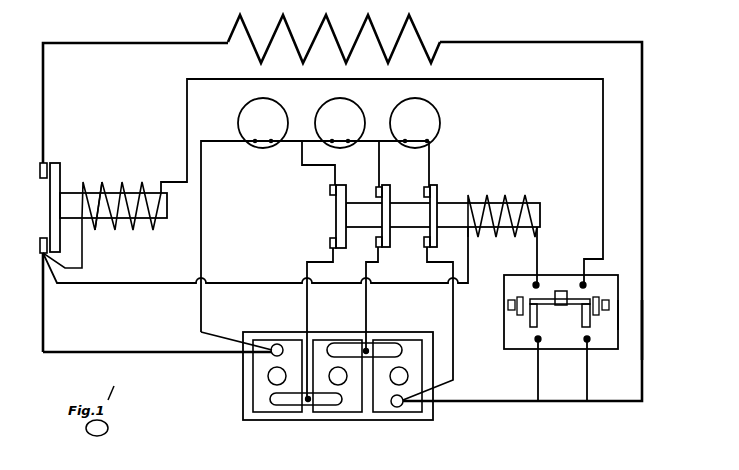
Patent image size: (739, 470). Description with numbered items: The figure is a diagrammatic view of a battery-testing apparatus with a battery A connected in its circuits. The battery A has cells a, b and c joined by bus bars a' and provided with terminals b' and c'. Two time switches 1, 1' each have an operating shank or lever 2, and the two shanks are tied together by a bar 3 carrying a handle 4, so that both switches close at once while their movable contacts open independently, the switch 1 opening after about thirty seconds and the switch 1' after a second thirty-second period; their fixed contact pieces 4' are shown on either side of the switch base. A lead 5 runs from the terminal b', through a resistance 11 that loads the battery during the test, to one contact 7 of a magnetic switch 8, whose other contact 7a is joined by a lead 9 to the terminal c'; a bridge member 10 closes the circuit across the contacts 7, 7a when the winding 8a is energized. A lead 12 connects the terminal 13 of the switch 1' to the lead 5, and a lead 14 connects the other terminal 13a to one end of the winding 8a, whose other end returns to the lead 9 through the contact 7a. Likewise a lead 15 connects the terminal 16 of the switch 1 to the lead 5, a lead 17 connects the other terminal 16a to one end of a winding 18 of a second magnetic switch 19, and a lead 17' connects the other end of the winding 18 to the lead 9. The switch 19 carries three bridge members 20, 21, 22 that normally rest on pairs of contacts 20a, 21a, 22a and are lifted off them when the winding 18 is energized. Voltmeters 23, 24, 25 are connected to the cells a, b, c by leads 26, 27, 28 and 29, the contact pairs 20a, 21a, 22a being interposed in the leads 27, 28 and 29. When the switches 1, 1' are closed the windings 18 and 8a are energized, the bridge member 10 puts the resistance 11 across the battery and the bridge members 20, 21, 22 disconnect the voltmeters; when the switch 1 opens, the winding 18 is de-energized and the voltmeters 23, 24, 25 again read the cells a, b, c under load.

The time switch 1 is at (552, 312).
The time switch 1' is at (618, 324).
The operating shank or lever 2 is at (580, 312).
The bar 3 is at (541, 298).
The handle 4 is at (562, 283).
The relay contacts 4' is at (558, 312).
The lead 5 is at (643, 333).
The contact 7 is at (40, 170).
The contact 7a is at (40, 246).
The magnetic switch 8 is at (102, 214).
The winding 8a is at (113, 231).
The lead 9 is at (143, 353).
The bridge member 10 is at (50, 207).
The resistance 11 is at (438, 47).
The lead 12 is at (587, 381).
The terminal 13 is at (588, 341).
The terminal 13a is at (584, 284).
The lead 14 is at (603, 186).
The lead 15 is at (538, 381).
The terminal 16 is at (538, 341).
The terminal 16a is at (536, 283).
The lead 17 is at (552, 255).
The lead 17' is at (255, 270).
The winding 18 is at (490, 200).
The magnetic switch 19 is at (443, 200).
The bridge member 20 is at (336, 214).
The contacts 20a is at (330, 190).
The bridge member 21 is at (377, 208).
The contacts 21a is at (377, 188).
The bridge member 22 is at (430, 214).
The contacts 22a is at (424, 188).
The voltmeter 23 is at (245, 112).
The voltmeter 24 is at (322, 112).
The voltmeter 25 is at (398, 112).
The lead 26 is at (202, 213).
The lead 27 is at (302, 158).
The lead 28 is at (379, 155).
The lead 29 is at (430, 150).
The cell a is at (258, 376).
The bus bars a' is at (307, 367).
The cell b is at (337, 392).
The terminal b' is at (414, 419).
The cell c is at (397, 392).
The terminal c' is at (276, 336).
The battery A is at (338, 388).